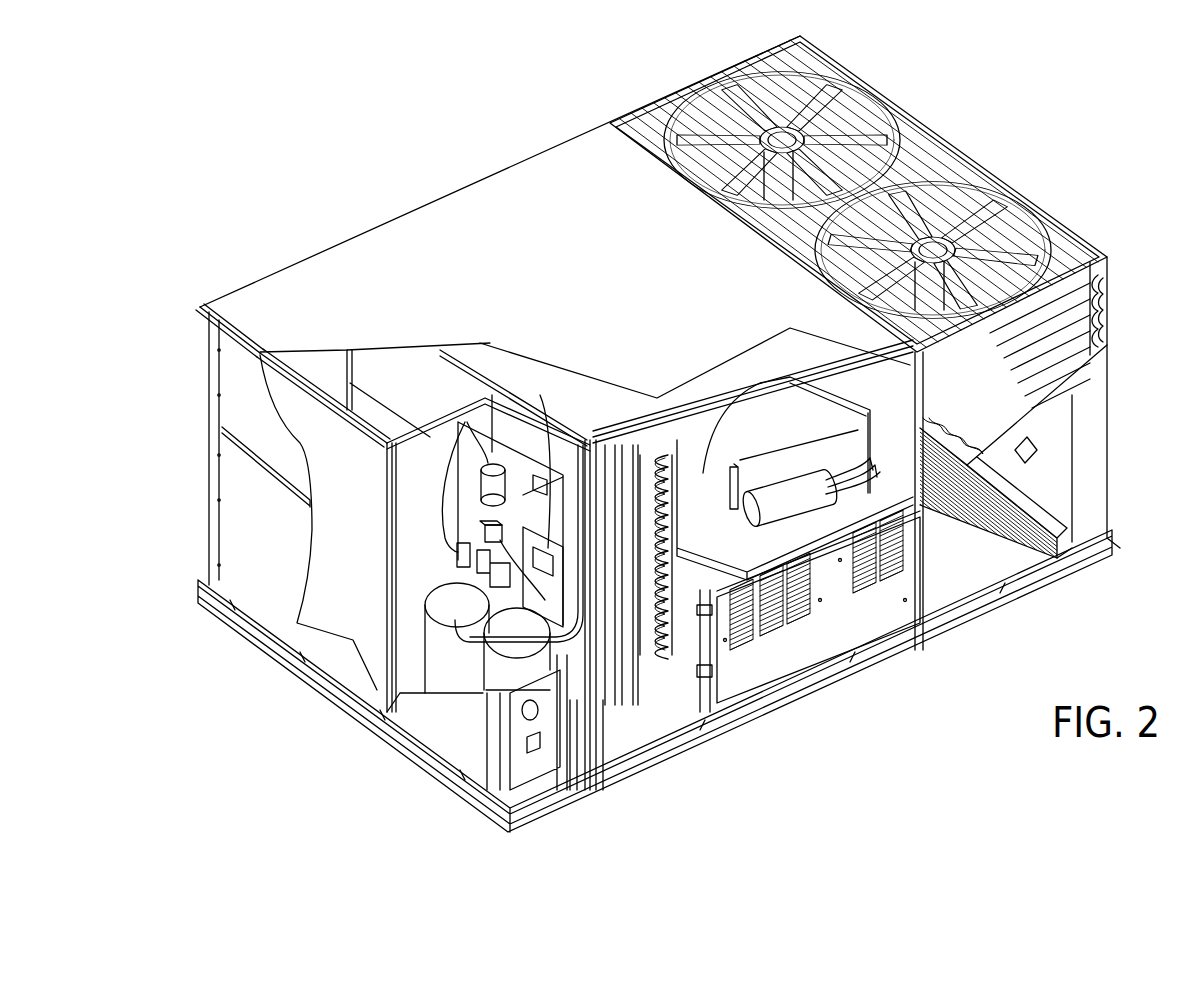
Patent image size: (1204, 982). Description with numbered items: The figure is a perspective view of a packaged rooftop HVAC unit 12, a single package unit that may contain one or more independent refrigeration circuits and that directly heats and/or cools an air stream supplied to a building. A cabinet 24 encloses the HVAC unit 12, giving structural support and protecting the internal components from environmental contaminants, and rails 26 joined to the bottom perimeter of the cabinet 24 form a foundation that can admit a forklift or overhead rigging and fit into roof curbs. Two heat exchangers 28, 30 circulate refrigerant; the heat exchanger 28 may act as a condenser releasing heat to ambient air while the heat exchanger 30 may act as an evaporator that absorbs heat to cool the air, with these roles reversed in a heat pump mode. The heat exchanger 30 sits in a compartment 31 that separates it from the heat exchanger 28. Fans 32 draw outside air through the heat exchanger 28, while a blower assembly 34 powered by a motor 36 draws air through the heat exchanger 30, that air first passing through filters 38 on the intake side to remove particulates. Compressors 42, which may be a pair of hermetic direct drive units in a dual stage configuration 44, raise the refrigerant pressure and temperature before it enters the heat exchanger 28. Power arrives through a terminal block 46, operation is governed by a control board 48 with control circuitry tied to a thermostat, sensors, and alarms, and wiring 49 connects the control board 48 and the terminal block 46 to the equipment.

The HVAC unit 12 is at (384, 136).
The cabinet 24 is at (245, 556).
The rails 26 is at (273, 643).
The heat exchanger 28 is at (1107, 318).
The heat exchanger 30 is at (650, 628).
The compartment 31 is at (672, 493).
The fans 32 is at (945, 195).
The blower assembly 34 is at (852, 448).
The motor 36 is at (787, 493).
The filters 38 is at (618, 470).
The compressors 42 is at (428, 635).
The dual stage configuration 44 is at (430, 592).
The terminal block 46 is at (485, 528).
The control board 48 is at (543, 535).
The wiring 49 is at (637, 460).